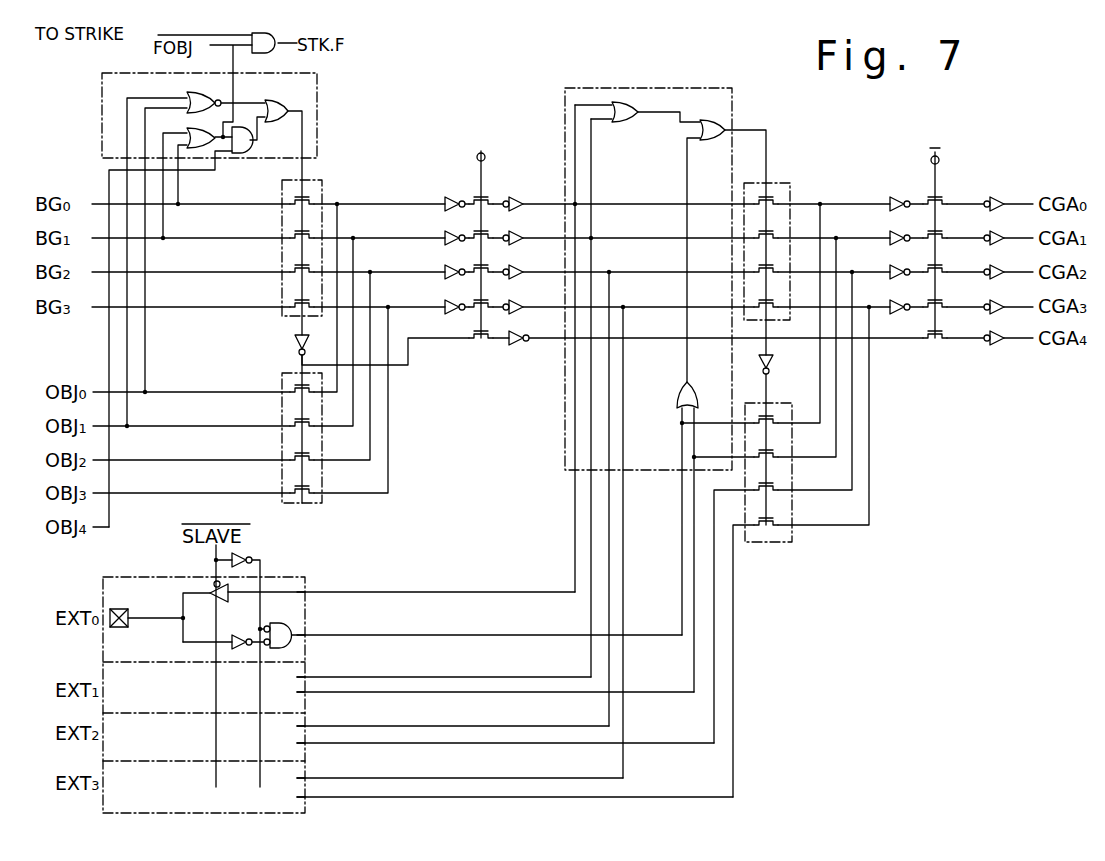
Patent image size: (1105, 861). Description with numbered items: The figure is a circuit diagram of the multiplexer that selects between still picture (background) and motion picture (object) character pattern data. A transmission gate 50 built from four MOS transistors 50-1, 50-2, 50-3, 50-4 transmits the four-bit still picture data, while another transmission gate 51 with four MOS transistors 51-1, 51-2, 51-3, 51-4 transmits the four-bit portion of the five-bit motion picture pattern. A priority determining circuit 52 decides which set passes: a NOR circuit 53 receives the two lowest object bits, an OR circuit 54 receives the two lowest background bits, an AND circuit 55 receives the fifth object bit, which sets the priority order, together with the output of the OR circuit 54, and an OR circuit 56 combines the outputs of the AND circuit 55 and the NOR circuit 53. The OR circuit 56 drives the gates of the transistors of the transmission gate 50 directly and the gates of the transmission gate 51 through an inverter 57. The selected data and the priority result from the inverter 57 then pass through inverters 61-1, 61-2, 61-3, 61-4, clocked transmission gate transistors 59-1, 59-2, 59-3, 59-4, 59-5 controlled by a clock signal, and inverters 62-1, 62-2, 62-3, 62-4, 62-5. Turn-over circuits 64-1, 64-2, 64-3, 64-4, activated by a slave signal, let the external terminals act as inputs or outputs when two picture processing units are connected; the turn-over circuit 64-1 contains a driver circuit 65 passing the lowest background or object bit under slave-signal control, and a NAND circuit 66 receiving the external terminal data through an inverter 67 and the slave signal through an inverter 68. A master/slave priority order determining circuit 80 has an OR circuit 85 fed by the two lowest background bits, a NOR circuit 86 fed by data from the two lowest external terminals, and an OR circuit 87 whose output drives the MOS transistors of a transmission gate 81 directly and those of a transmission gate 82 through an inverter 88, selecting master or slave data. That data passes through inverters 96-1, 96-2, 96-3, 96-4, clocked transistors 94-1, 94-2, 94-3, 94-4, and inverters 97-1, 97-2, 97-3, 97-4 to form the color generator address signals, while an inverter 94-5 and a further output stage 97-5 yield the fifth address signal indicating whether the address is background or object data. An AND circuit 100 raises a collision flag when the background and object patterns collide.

The AND circuit 100 is at (270, 54).
The priority determining circuit 52 is at (320, 78).
The NOR circuit 53 is at (192, 94).
The OR circuit 54 is at (192, 130).
The AND circuit 55 is at (254, 147).
The OR circuit 56 is at (270, 102).
The transmission gate 50 is at (319, 180).
The MOS transistor 50-1 is at (312, 198).
The MOS transistor 50-2 is at (315, 236).
The MOS transistor 50-3 is at (294, 270).
The MOS transistor 50-4 is at (294, 304).
The inverter 57 is at (294, 340).
The transmission gate 51 is at (282, 373).
The MOS transistor 51-1 is at (294, 390).
The MOS transistor 51-2 is at (294, 424).
The MOS transistor 51-3 is at (294, 457).
The MOS transistor 51-4 is at (294, 491).
The inverter 61-1 is at (446, 199).
The inverter 61-2 is at (446, 236).
The inverter 61-3 is at (446, 270).
The inverter 61-4 is at (446, 305).
The transmission gate transistor 59-1 is at (484, 198).
The transmission gate transistor 59-2 is at (490, 232).
The transmission gate transistor 59-3 is at (490, 268).
The transmission gate transistor 59-4 is at (490, 303).
The transmission gate transistor 59-5 is at (482, 345).
The inverter 62-1 is at (522, 198).
The inverter 62-2 is at (522, 236).
The inverter 62-3 is at (522, 270).
The inverter 62-4 is at (522, 310).
The inverter 62-5 is at (518, 346).
The master/slave priority order determining circuit 80 is at (688, 88).
The OR circuit 85 is at (631, 102).
The OR circuit 87 is at (722, 122).
The transmission gate 81 is at (788, 183).
The NOR circuit 86 is at (698, 397).
The inverter 88 is at (773, 357).
The transmission gate 82 is at (778, 403).
The inverter 96-1 is at (894, 198).
The inverter 96-2 is at (893, 233).
The inverter 96-3 is at (894, 267).
The inverter 96-4 is at (894, 302).
The transmission gate MOS transistor 94-1 is at (940, 198).
The transmission gate MOS transistor 94-2 is at (960, 225).
The transmission gate MOS transistor 94-3 is at (960, 260).
The transmission gate MOS transistor 94-4 is at (960, 295).
The inverter 94-5 is at (960, 329).
The inverter 97-1 is at (996, 198).
The inverter 97-2 is at (996, 233).
The inverter 97-3 is at (996, 267).
The inverter 97-4 is at (996, 302).
The output inverter 97-5 is at (994, 346).
The inverter 68 is at (248, 558).
The turn-over circuit 64-1 is at (300, 577).
The turn-over circuit 64-2 is at (300, 675).
The turn-over circuit 64-3 is at (300, 724).
The turn-over circuit 64-4 is at (300, 776).
The driver circuit 65 is at (208, 590).
The NAND circuit 66 is at (292, 620).
The inverter 67 is at (234, 638).